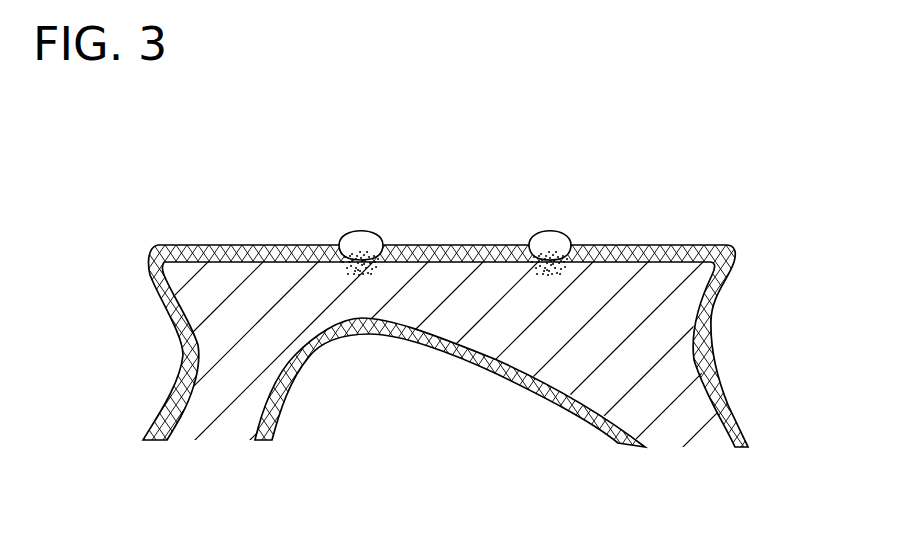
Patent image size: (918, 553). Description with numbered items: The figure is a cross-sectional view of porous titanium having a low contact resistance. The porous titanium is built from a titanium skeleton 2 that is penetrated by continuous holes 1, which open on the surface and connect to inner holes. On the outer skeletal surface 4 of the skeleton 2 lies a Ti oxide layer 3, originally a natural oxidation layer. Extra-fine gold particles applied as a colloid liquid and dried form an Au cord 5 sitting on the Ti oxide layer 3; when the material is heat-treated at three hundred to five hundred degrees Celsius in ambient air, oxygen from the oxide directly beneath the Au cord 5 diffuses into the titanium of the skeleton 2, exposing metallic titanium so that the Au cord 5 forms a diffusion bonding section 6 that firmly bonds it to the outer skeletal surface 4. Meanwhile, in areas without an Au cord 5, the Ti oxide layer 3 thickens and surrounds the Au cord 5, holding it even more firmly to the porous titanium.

The continuous holes 1 is at (459, 331).
The skeleton 2 is at (670, 433).
The Ti oxide layer 3 is at (475, 247).
The outer skeletal surface 4 is at (237, 263).
The Au cord 5 is at (360, 240).
The diffusion bonding section 6 is at (547, 268).